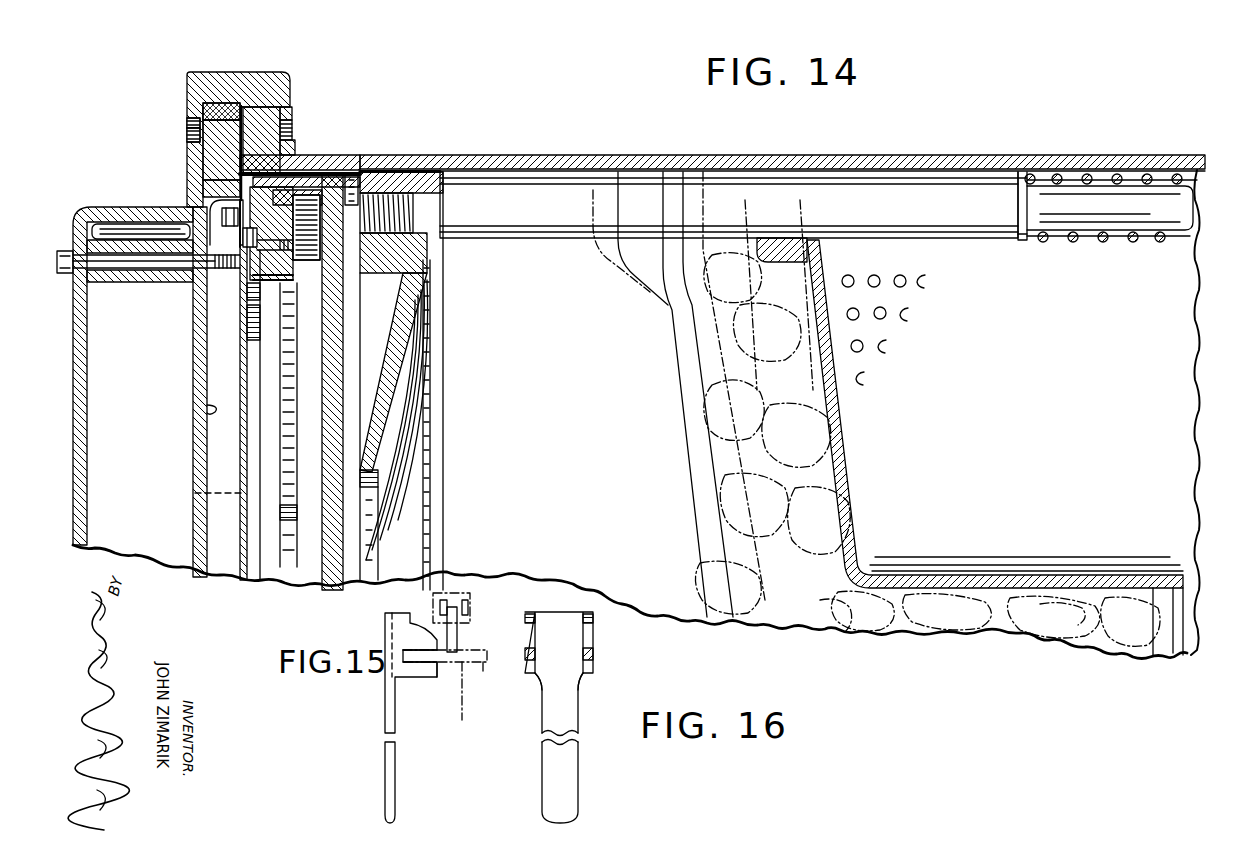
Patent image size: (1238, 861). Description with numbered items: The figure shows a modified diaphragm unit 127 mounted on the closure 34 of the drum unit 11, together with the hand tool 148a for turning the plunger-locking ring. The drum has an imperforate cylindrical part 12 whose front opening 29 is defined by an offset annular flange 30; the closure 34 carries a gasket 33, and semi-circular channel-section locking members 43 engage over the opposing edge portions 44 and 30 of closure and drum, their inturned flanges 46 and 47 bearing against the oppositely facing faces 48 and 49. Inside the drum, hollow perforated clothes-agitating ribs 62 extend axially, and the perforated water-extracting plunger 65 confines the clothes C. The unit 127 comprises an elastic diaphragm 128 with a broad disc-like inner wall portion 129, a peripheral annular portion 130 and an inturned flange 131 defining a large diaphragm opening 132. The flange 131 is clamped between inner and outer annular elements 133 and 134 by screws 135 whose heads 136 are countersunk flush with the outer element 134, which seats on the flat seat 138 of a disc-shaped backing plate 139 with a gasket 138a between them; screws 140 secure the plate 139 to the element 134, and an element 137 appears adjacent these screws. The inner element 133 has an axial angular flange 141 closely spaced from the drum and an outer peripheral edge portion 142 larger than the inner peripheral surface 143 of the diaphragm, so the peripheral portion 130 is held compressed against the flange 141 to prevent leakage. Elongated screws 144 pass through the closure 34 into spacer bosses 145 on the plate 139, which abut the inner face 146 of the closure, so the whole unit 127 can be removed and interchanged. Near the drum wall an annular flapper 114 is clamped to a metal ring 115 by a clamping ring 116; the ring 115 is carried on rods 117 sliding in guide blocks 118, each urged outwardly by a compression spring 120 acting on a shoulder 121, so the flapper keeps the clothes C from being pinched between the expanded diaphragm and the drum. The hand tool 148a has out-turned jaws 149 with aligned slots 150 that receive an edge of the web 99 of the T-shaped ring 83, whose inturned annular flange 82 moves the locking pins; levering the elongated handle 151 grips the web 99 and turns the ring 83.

In FIG. 14, the clothes-containing drum unit 11 is at (917, 150).
In FIG. 14, the imperforate cylindrical part 12 is at (606, 157).
In FIG. 14, the front opening 29 is at (253, 172).
In FIG. 14, the offset annular flange 30 is at (261, 105).
In FIG. 14, the gasket 33 is at (236, 88).
In FIG. 14, the closure 34 is at (96, 207).
In FIG. 14, the locking members 43 is at (187, 92).
In FIG. 14, the annular edge portion 44 is at (210, 103).
In FIG. 14, the inturned flange 46 is at (187, 114).
In FIG. 14, the inturned flange 47 is at (288, 105).
In FIG. 14, the face 48 is at (187, 135).
In FIG. 14, the face 49 is at (292, 130).
In FIG. 14, the clothes-agitating ribs 62 is at (1094, 630).
In FIG. 14, the perforated water-extracting plunger 65 is at (1144, 658).
In FIG. 15, the inturned annular flange 82 is at (464, 632).
In FIG. 15, the T-shaped ring 83 is at (445, 674).
In FIG. 15, the web 99 is at (479, 676).
In FIG. 14, the annular flapper 114 is at (403, 372).
In FIG. 14, the annular ring 115 is at (423, 170).
In FIG. 14, the annular clamping ring 116 is at (446, 170).
In FIG. 14, the metal rods 117 is at (547, 215).
In FIG. 14, the guide block 118 is at (787, 252).
In FIG. 14, the compression spring 120 is at (1106, 240).
In FIG. 14, the shoulder 121 is at (1023, 215).
In FIG. 14, the diaphragm unit 127 is at (313, 170).
In FIG. 14, the diaphragm 128 is at (346, 388).
In FIG. 14, the disc-like inner wall portion 129 is at (345, 352).
In FIG. 14, the peripheral annular portion 130 is at (302, 190).
In FIG. 14, the inturned annular flange 131 is at (289, 296).
In FIG. 14, the diaphragm opening 132 is at (248, 312).
In FIG. 14, the inner annular element 133 is at (291, 278).
In FIG. 14, the outer annular element 134 is at (247, 290).
In FIG. 14, the screws 135 is at (288, 252).
In FIG. 14, the head 136 is at (243, 240).
In FIG. 14, the bolt 137 is at (222, 203).
In FIG. 14, the flat seat 138 is at (240, 185).
In FIG. 14, the gasket 138a is at (197, 494).
In FIG. 14, the backing plate 139 is at (243, 455).
In FIG. 14, the screws 140 is at (227, 215).
In FIG. 14, the angular flange 141 is at (353, 175).
In FIG. 14, the outer peripheral edge portion 142 is at (302, 170).
In FIG. 14, the inner peripheral surface 143 is at (341, 165).
In FIG. 14, the elongated screws 144 is at (133, 263).
In FIG. 14, the spacer bosses 145 is at (193, 298).
In FIG. 14, the inner face 146 is at (207, 408).
In FIG. 15, the bracket 148a is at (383, 722).
In FIG. 16, the bracket 148a is at (597, 640).
In FIG. 15, the out-turned jaws 149 is at (411, 680).
In FIG. 16, the out-turned jaws 149 is at (588, 680).
In FIG. 15, the slots 150 is at (411, 677).
In FIG. 16, the slots 150 is at (594, 657).
In FIG. 15, the elongated handle 151 is at (390, 795).
In FIG. 16, the elongated handle 151 is at (572, 762).
In FIG. 14, the clothes C is at (860, 636).